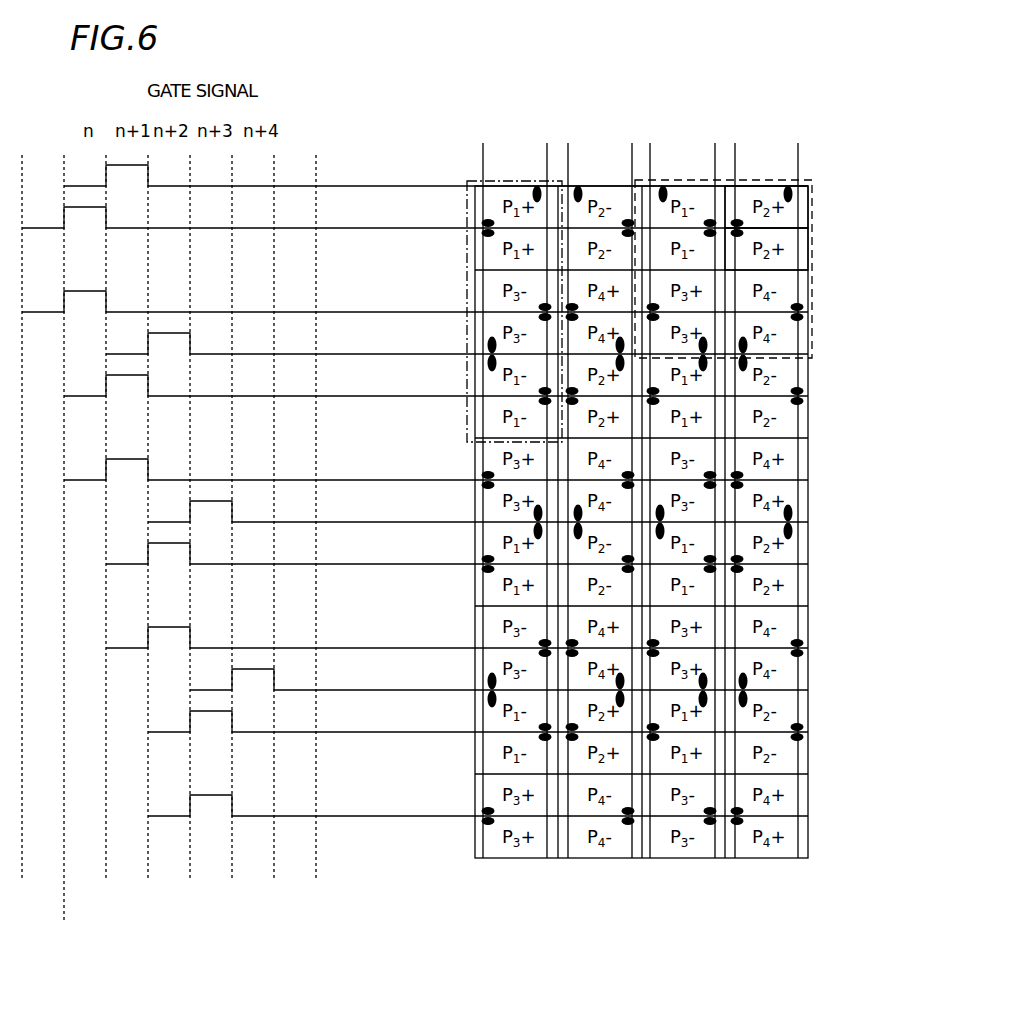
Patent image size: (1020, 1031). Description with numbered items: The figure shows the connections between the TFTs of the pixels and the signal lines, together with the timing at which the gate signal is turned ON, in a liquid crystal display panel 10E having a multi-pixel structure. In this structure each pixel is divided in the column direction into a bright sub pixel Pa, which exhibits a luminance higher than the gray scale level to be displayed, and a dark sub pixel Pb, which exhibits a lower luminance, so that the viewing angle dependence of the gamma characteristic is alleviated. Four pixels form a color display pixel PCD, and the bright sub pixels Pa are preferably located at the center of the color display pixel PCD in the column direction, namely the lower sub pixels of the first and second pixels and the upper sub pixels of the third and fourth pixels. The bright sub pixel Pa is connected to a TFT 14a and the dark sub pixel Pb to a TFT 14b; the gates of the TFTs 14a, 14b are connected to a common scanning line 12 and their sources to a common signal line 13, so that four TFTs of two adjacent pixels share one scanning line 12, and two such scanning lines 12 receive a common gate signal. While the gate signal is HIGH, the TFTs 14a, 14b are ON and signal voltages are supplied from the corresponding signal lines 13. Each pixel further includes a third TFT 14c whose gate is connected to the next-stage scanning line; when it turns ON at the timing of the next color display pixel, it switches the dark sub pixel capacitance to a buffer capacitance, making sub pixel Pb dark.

The liquid crystal display panel 10E is at (803, 67).
The scanning line 12 is at (362, 185).
The signal line 13 is at (484, 160).
The TFT 14a is at (481, 221).
The TFT 14b is at (484, 222).
The third TFT 14c is at (533, 187).
The color display pixel PCD is at (808, 181).
The bright sub pixel Pa is at (788, 263).
The dark sub pixel Pb is at (790, 213).